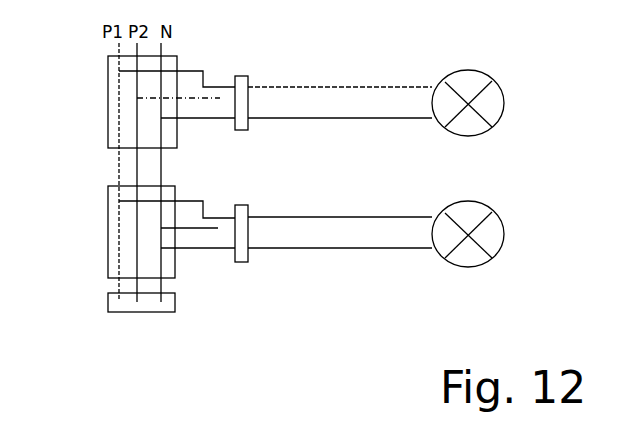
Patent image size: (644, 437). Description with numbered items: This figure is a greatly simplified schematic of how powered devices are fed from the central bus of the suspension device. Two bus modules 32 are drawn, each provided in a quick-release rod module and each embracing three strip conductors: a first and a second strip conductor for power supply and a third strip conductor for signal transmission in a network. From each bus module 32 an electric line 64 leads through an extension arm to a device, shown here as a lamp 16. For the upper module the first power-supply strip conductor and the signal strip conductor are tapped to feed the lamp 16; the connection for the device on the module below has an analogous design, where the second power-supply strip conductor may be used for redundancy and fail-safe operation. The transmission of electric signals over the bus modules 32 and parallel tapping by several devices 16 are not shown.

The bus module 32 is at (108, 88).
The electric line 64 is at (355, 118).
The lamp 16 is at (498, 82).